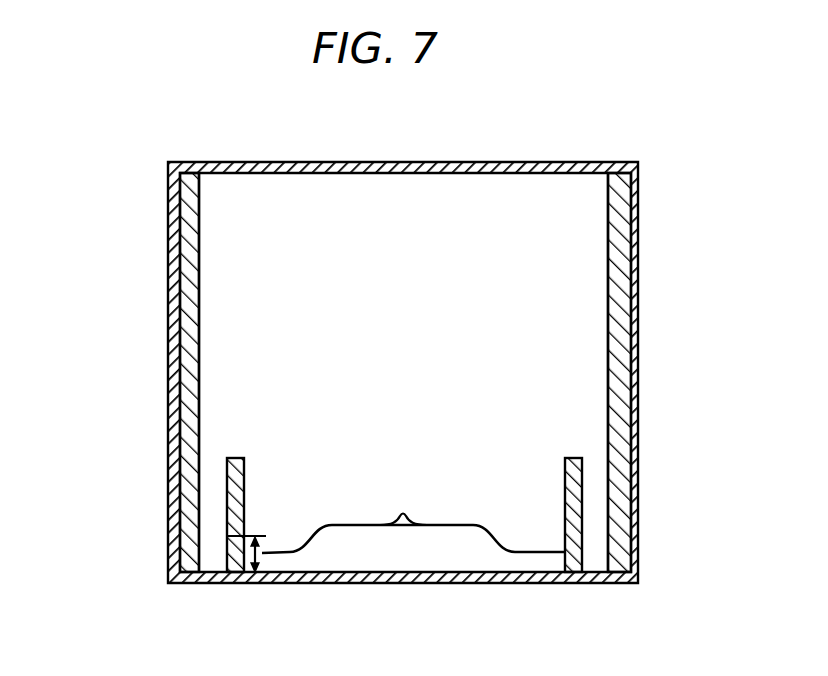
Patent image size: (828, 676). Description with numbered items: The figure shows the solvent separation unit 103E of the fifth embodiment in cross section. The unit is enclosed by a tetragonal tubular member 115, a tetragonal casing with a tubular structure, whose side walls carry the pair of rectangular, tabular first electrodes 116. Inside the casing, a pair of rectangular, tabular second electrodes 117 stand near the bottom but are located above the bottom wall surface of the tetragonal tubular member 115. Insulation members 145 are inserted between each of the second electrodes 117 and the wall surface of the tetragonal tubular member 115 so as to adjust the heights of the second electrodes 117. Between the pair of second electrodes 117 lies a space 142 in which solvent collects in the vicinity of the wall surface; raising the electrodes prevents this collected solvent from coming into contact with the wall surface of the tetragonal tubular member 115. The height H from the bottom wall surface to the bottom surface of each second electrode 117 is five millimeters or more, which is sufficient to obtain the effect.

The solvent separation unit 103E is at (163, 151).
The tetragonal tubular member 115 is at (638, 322).
The first electrodes 116 is at (184, 384).
The second electrodes 117 is at (245, 465).
The space between the pair of second electrodes 142 is at (406, 534).
The insulation members 145 is at (403, 504).
The height H is at (263, 557).